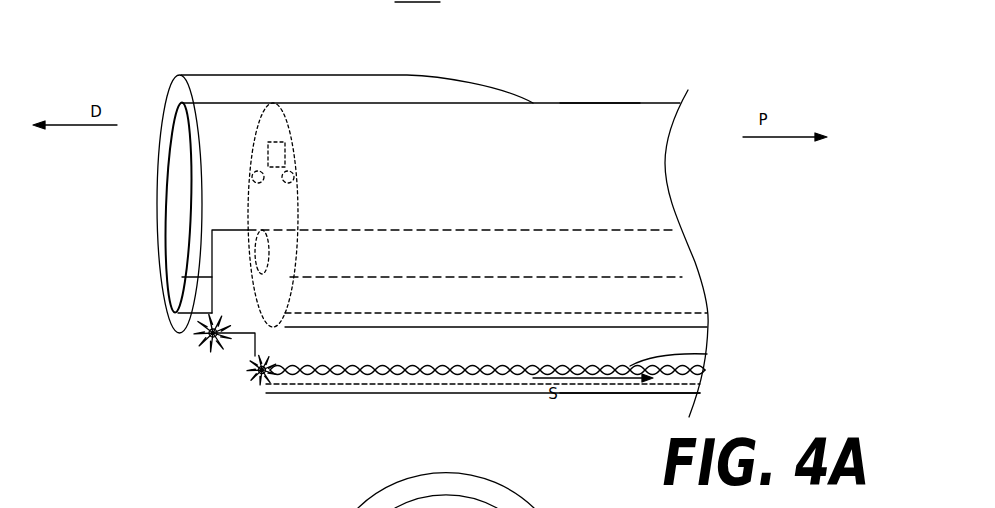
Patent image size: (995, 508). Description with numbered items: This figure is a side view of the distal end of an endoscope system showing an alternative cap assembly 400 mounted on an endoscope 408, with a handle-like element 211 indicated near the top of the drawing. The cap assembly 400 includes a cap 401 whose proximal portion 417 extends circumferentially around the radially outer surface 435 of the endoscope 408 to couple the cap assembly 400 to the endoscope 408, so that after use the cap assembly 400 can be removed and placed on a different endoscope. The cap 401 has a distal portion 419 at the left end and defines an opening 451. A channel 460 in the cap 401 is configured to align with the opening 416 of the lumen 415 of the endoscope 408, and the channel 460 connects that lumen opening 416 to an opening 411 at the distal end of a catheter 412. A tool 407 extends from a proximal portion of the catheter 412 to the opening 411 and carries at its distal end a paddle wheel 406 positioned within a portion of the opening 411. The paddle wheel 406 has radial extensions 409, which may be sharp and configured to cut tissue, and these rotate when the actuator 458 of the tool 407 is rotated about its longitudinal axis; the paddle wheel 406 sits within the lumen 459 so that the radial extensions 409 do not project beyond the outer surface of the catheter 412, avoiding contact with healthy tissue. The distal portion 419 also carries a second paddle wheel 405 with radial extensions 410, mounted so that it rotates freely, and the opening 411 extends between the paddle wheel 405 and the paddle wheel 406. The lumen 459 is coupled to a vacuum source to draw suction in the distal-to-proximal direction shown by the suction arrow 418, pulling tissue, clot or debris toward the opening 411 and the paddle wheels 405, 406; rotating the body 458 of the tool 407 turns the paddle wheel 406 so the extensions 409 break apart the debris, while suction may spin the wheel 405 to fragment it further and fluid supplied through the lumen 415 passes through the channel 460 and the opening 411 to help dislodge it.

The cap assembly 400 is at (217, 58).
The handle 211 is at (385, 3).
The cap 401 is at (400, 77).
The radially outer surface 435 is at (603, 103).
The endoscope 408 is at (649, 113).
The lumen 415 is at (453, 228).
The opening of lumen 416 is at (268, 253).
The proximal portion of cap 417 is at (518, 327).
The opening 451 is at (158, 205).
The distal portion of cap 419 is at (167, 268).
The channel 460 is at (229, 270).
The second paddle wheel 405 is at (207, 345).
The radial extensions 410 is at (210, 355).
The opening 411 is at (230, 370).
The paddle wheel 406 is at (250, 360).
The radial extensions 409 is at (264, 388).
The tool 407 is at (388, 373).
The catheter 412 is at (455, 395).
The lumen 459 is at (497, 386).
The suction arrow 418 is at (603, 386).
The actuator 458 is at (707, 354).